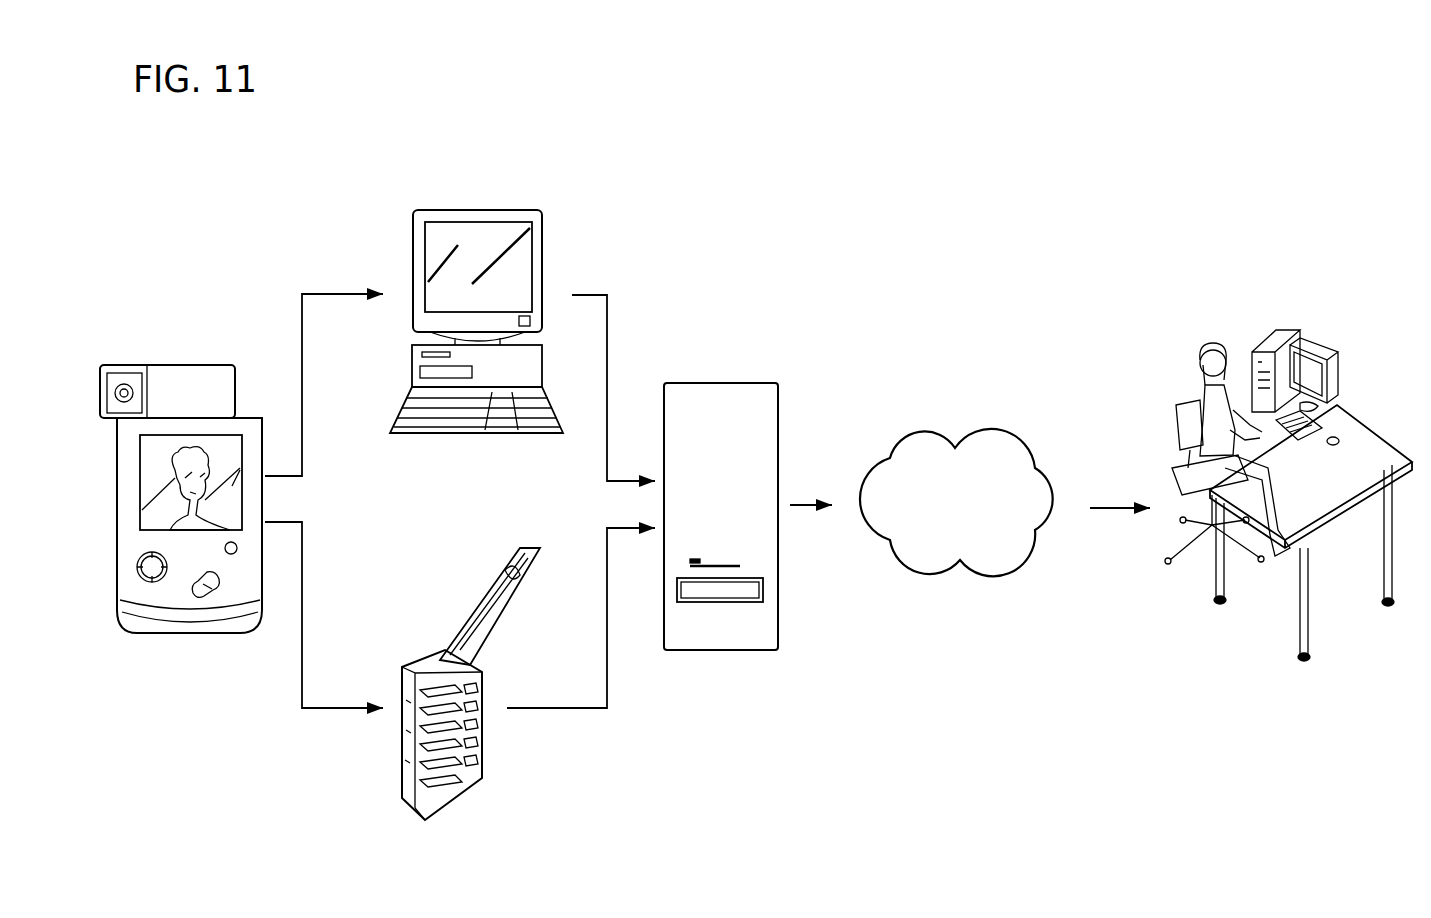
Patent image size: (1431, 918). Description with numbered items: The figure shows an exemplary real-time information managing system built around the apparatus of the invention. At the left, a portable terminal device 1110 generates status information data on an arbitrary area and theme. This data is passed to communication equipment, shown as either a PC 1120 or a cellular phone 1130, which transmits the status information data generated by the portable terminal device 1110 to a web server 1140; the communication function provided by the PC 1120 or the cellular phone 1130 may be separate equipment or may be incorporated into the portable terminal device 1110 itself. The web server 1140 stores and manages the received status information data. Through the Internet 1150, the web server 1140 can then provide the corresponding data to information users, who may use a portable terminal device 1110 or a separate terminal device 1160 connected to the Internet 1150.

The portable terminal device 1110 is at (195, 365).
The PC 1120 is at (500, 210).
The cellular phone 1130 is at (425, 645).
The web server 1140 is at (730, 383).
The Internet 1150 is at (995, 432).
The separate terminal device 1160 is at (1290, 322).